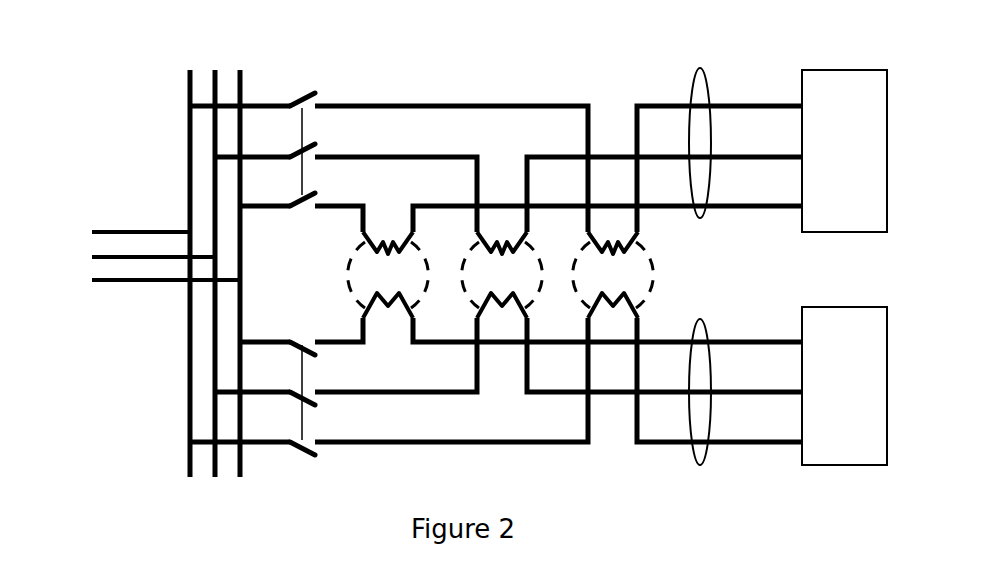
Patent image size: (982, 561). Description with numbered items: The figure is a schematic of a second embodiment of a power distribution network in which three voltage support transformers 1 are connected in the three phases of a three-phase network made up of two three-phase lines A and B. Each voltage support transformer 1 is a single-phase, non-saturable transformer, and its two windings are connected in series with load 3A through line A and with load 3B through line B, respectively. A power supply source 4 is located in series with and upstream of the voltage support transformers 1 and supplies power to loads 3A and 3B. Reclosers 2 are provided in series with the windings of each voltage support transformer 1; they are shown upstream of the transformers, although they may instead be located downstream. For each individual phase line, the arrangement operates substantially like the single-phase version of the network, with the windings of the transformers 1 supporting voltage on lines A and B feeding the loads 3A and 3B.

The voltage support transformer (VST) 1 is at (501, 275).
The recloser 2 is at (297, 80).
The load 3A is at (844, 151).
The load 3B is at (844, 386).
The power supply source 4 is at (147, 273).
The line A is at (705, 78).
The line B is at (703, 327).